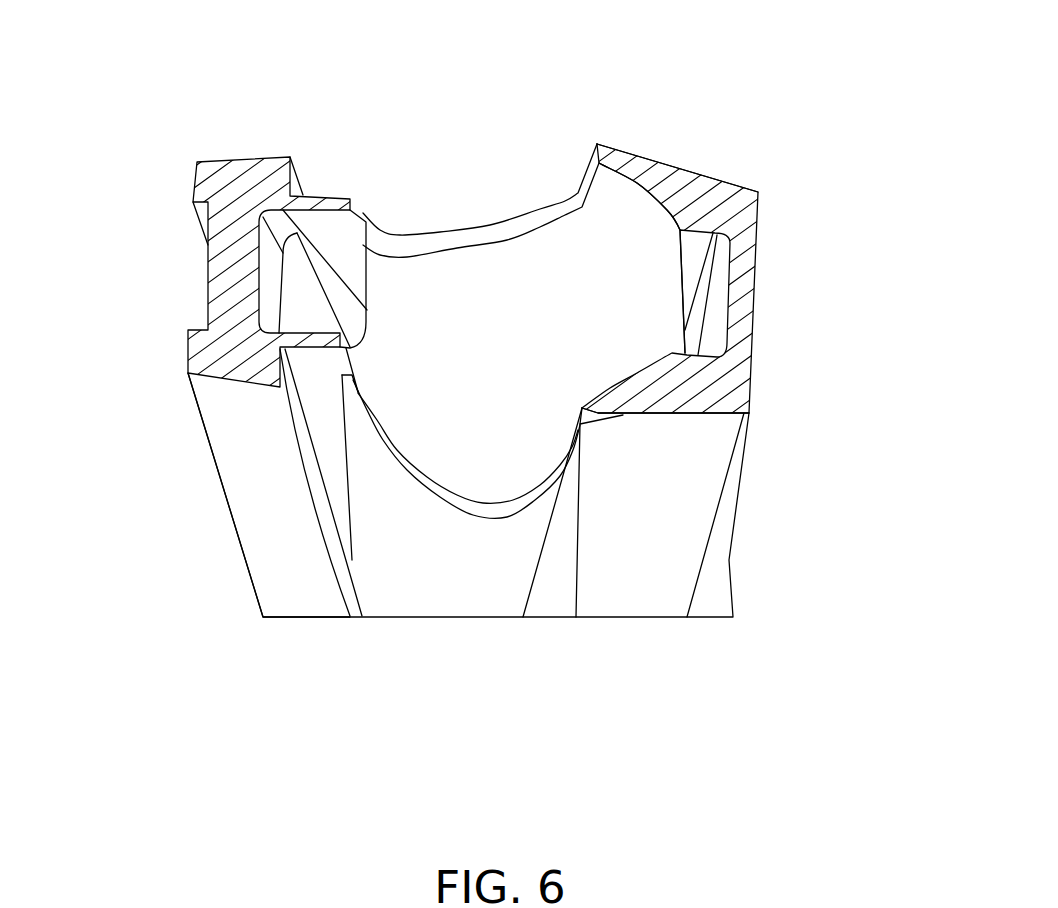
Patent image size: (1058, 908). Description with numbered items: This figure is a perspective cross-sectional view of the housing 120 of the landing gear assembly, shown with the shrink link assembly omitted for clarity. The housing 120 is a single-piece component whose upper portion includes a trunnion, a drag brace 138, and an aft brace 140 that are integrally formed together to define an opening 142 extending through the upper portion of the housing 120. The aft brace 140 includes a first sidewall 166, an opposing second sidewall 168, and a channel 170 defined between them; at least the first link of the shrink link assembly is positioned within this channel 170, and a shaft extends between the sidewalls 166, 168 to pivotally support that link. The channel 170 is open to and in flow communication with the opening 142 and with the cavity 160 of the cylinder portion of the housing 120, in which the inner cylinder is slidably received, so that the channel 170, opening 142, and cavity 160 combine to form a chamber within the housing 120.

The housing 120 is at (128, 102).
The drag brace 138 is at (233, 405).
The aft brace 140 is at (715, 427).
The opening 142 is at (404, 185).
The cavity 160 is at (449, 470).
The first sidewall 166 is at (623, 415).
The second sidewall 168 is at (634, 162).
The channel 170 is at (631, 250).